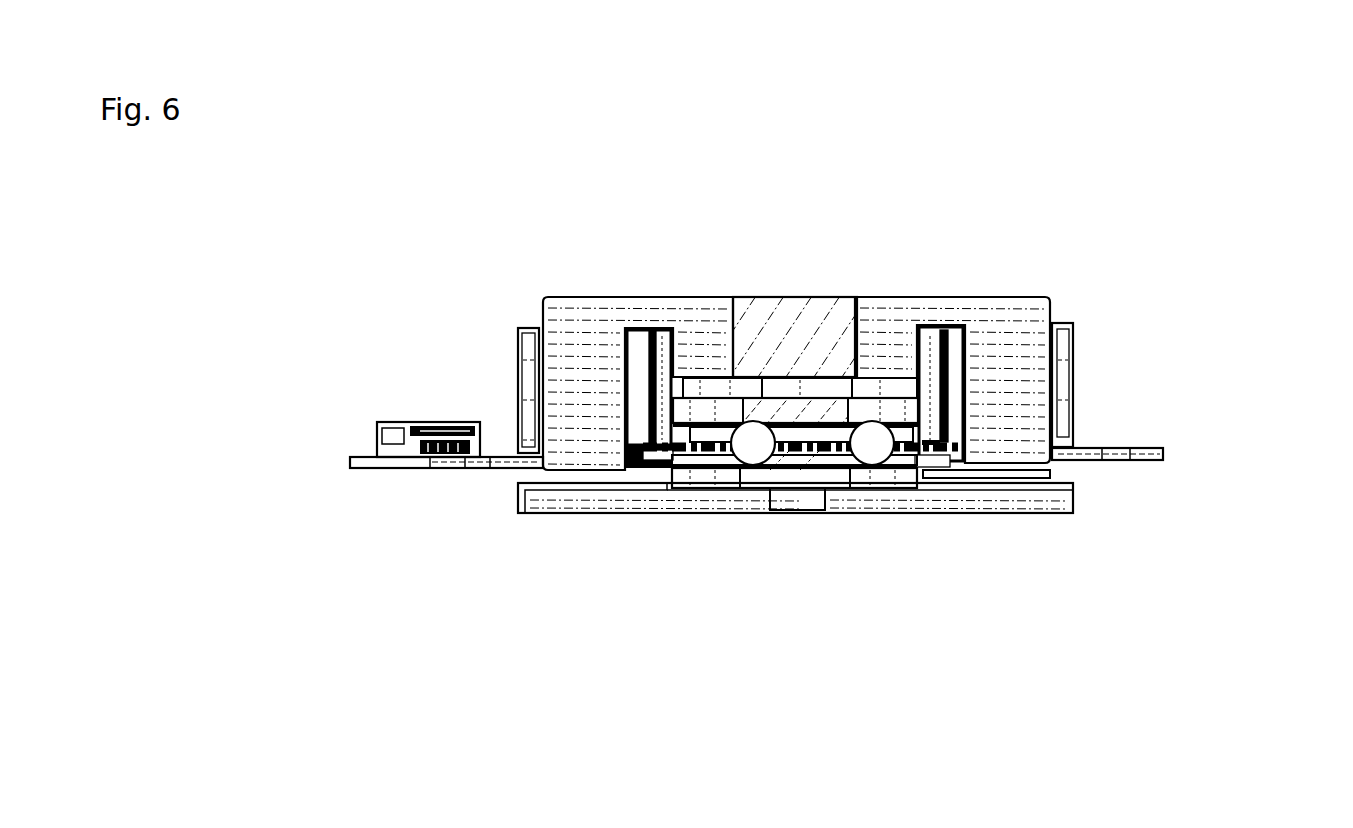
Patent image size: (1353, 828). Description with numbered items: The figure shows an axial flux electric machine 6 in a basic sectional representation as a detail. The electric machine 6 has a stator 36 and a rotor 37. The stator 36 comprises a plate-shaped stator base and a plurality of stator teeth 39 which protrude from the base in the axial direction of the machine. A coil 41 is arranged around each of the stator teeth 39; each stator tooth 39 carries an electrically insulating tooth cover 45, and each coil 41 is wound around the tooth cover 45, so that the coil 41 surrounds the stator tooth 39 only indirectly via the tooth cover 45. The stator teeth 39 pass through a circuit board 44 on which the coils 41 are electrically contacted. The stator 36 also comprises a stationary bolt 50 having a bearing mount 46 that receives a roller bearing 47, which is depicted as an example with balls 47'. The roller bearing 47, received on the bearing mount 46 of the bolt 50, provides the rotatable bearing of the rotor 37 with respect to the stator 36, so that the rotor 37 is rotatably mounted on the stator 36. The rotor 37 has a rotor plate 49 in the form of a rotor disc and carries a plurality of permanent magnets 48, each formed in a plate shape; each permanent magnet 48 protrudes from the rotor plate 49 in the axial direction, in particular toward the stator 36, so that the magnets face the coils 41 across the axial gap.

The electric machine 6 is at (990, 194).
The stator 36 is at (1054, 292).
The rotor 37 is at (638, 526).
The stator teeth 39 is at (1022, 437).
The coil 41 is at (1065, 340).
The circuit board 44 is at (373, 468).
The tooth cover 45 is at (1062, 443).
The bearing mount 46 is at (706, 393).
The roller bearing 47 is at (933, 530).
The balls 47' is at (851, 554).
The permanent magnets 48 is at (552, 485).
The rotor plate 49 is at (1018, 502).
The bolt 50 is at (838, 323).